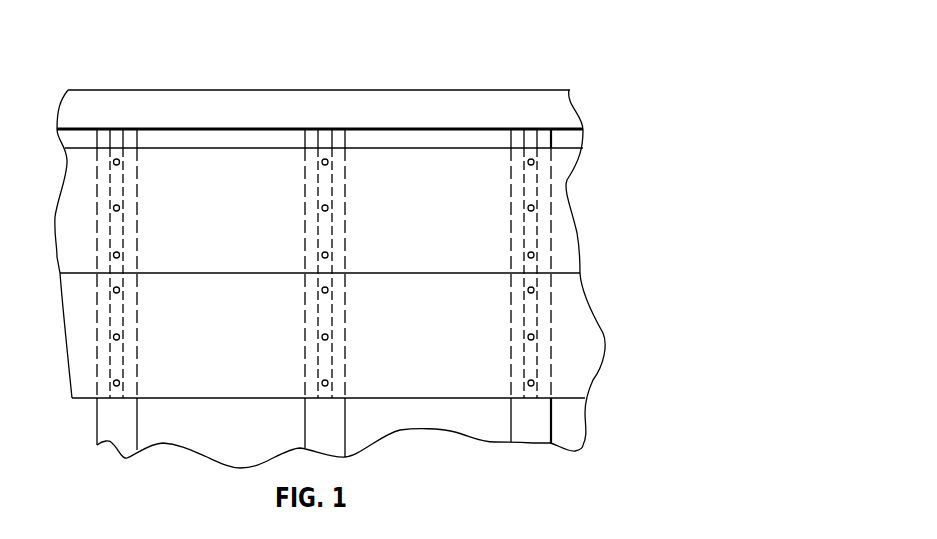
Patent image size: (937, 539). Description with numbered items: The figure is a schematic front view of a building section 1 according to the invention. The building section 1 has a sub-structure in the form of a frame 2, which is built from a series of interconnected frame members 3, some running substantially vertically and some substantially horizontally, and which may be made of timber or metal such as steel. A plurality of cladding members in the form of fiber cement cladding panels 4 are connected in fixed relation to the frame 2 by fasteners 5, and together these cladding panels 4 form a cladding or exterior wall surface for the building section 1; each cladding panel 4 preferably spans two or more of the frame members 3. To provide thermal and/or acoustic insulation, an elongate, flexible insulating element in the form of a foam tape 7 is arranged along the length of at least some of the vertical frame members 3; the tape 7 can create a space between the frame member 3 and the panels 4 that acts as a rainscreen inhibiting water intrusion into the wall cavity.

The building section 1 is at (530, 60).
The frame 2 is at (410, 85).
The frame member 3 is at (190, 100).
The fiber cement cladding panel 4 is at (560, 251).
The fastener 5 is at (116, 337).
The foam tape 7 is at (122, 238).